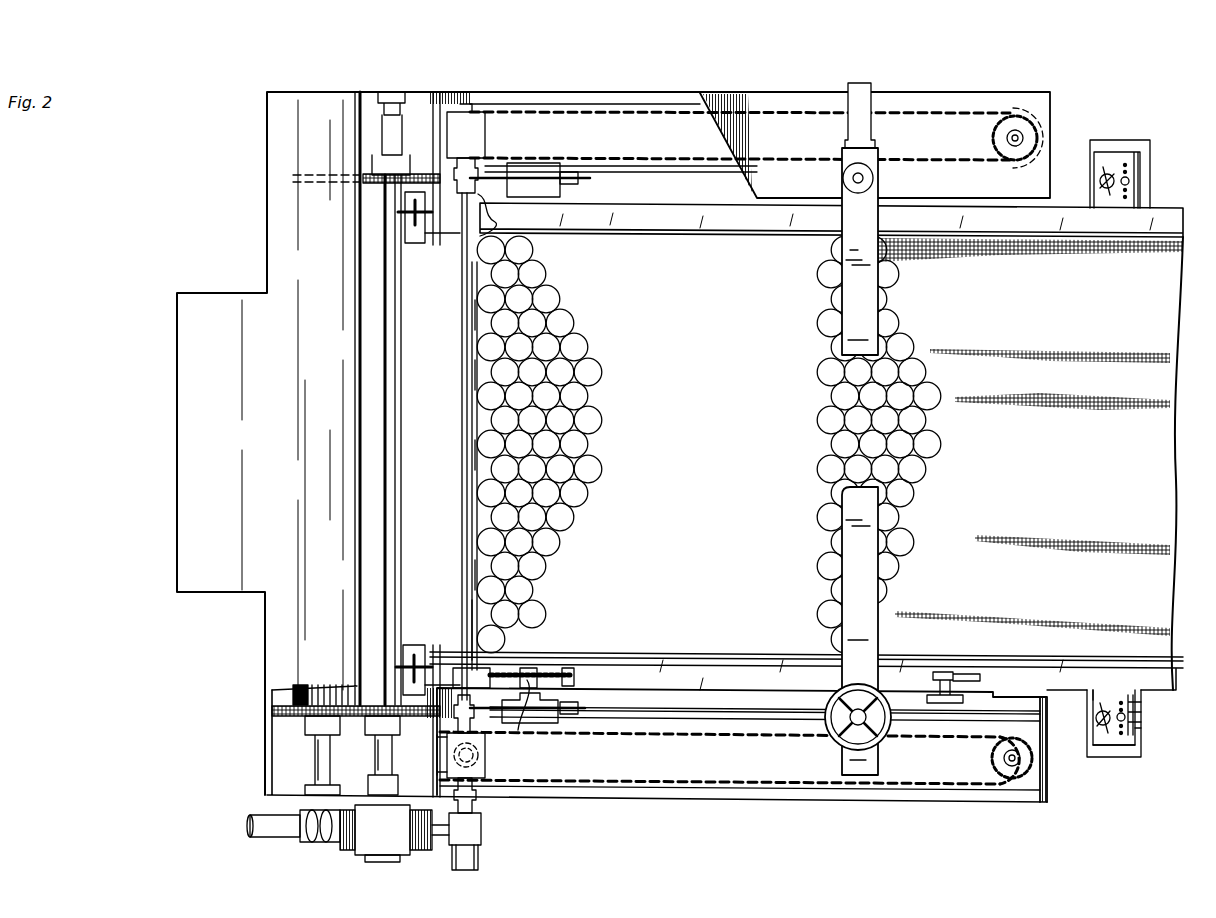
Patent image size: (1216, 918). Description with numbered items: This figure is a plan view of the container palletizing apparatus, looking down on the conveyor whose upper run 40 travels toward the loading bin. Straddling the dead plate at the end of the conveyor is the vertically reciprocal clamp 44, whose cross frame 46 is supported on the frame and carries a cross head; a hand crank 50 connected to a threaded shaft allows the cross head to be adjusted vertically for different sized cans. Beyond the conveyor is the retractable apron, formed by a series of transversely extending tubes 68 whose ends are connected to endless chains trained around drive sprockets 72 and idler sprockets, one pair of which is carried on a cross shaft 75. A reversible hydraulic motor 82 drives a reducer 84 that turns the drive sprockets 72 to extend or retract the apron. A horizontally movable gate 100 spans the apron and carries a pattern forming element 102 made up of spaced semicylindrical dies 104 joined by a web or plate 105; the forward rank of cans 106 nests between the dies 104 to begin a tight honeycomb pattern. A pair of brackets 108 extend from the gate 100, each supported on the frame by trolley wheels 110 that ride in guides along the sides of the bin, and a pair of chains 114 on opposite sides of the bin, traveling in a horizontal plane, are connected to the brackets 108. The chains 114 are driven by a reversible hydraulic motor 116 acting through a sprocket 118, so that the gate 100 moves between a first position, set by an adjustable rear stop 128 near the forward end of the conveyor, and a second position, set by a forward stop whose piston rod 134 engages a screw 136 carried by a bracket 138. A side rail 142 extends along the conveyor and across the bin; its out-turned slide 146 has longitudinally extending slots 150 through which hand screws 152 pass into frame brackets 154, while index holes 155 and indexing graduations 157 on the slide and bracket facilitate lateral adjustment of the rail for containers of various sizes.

The upper run 40 is at (1095, 311).
The vertically reciprocal clamp 44 is at (895, 572).
The cross frame 46 is at (872, 218).
The hand crank 50 is at (838, 740).
The transversely extending tubes 68 is at (292, 694).
The drive sprockets 72 is at (318, 176).
The cross shaft 75 is at (323, 686).
The reversible hydraulic motor 82 is at (250, 823).
The reducer 84 is at (340, 842).
The horizontally movable gate 100 is at (463, 395).
The pattern forming element 102 is at (470, 331).
The semicylindrical dies 104 is at (480, 610).
The web or plate 105 is at (472, 505).
The cans 106 is at (500, 460).
The brackets 108 is at (498, 208).
The trolley wheels 110 is at (572, 182).
The chains 114 is at (930, 110).
The reversible hydraulic motor 116 is at (482, 828).
The sprocket 118 is at (486, 768).
The adjustable rear stop 128 is at (947, 670).
The piston rod 134 is at (498, 675).
The screw 136 is at (565, 676).
The bracket 138 is at (518, 732).
The side rail 142 is at (776, 658).
The out-turned slide 146 is at (1118, 690).
The longitudinally extending slots 150 is at (1108, 748).
The hand screws 152 is at (1096, 717).
The frame brackets 154 is at (1119, 748).
The index holes 155 is at (1131, 703).
The indexing graduations 157 is at (1140, 729).